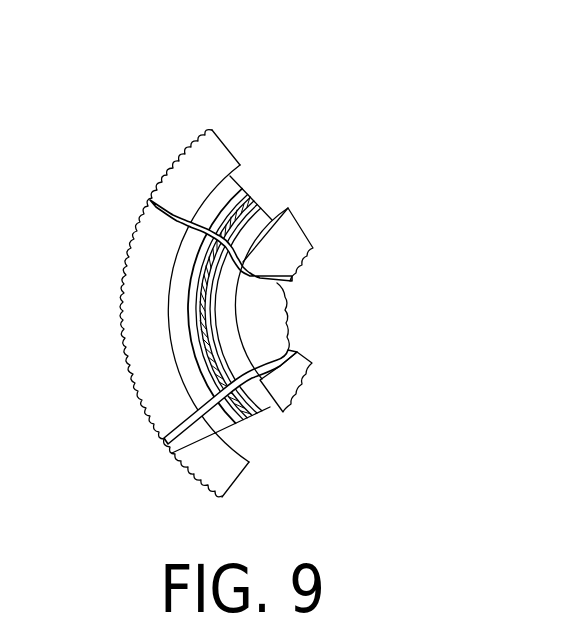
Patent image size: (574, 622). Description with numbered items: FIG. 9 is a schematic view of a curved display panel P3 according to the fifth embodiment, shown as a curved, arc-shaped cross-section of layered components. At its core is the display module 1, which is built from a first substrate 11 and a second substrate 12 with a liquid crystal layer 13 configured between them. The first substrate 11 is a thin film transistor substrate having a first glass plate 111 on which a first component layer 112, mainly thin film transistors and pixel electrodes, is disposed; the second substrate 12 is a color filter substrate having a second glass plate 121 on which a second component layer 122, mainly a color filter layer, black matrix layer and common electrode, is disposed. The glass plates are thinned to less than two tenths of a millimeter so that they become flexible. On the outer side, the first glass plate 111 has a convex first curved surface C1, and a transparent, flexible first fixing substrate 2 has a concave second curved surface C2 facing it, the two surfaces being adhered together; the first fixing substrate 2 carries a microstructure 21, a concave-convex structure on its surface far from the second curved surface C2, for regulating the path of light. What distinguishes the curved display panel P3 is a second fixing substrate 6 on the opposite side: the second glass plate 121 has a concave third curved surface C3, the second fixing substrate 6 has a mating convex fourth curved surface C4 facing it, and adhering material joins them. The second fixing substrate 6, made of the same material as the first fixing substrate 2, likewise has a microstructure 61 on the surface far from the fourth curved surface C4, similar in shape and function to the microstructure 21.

The display module 1 is at (324, 217).
The first substrate 11 is at (299, 214).
The first glass plate 111 is at (239, 194).
The first component layer 112 is at (250, 196).
The second substrate 12 is at (310, 273).
The second glass plate 121 is at (266, 212).
The second component layer 122 is at (263, 199).
The liquid crystal layer 13 is at (265, 198).
The first fixing substrate 2 is at (142, 313).
The microstructure 21 is at (124, 290).
The second fixing substrate 6 is at (262, 322).
The microstructure 61 is at (290, 330).
The first curved surface C1 is at (198, 389).
The second curved surface C2 is at (251, 458).
The third curved surface C3 is at (230, 327).
The fourth curved surface C4 is at (279, 416).
The curved display panel P3 is at (383, 436).